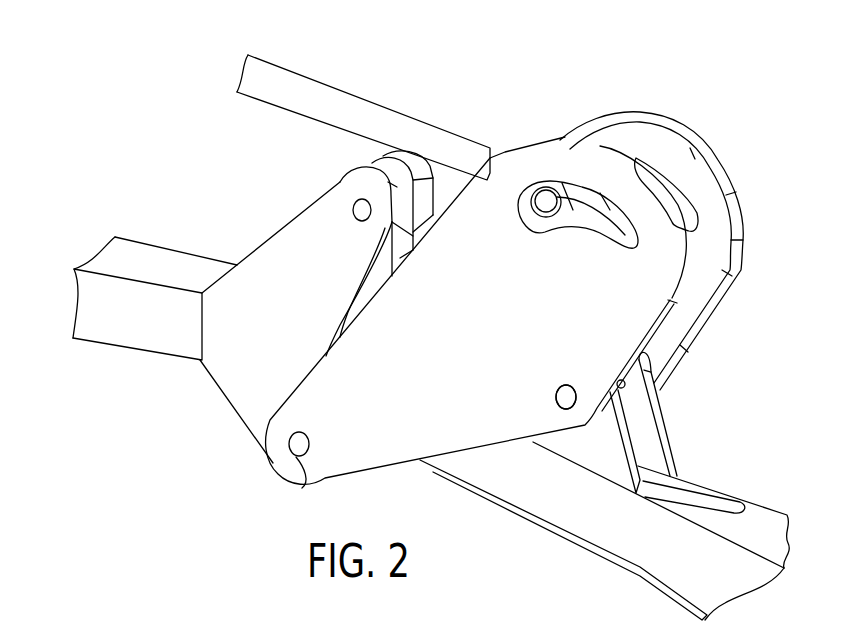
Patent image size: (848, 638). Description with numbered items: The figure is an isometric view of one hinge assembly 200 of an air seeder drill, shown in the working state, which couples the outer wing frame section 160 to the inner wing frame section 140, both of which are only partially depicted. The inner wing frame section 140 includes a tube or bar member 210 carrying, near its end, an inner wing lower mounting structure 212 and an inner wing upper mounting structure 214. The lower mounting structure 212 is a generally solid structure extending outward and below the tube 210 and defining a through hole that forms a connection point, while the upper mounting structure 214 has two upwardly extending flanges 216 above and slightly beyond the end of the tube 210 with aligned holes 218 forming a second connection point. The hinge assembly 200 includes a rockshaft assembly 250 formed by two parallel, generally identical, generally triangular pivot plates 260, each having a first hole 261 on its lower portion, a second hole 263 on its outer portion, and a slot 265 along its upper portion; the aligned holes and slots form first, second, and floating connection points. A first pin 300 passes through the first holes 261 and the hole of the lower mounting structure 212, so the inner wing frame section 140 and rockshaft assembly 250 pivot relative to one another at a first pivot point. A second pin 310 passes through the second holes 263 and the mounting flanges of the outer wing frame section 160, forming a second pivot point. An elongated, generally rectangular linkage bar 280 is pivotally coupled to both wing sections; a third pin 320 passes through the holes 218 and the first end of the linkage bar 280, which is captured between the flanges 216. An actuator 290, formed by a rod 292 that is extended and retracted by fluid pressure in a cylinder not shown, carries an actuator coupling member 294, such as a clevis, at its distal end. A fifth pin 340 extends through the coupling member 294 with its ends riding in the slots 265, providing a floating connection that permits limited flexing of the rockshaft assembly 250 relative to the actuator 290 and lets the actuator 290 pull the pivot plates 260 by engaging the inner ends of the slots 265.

The hinge assembly 200 is at (146, 121).
The inner wing frame section 140 is at (160, 229).
The tube or bar member 210 is at (130, 262).
The inner wing lower mounting structure 212 is at (250, 385).
The inner wing upper mounting structure 214 is at (330, 161).
The upwardly extending flanges 216 is at (425, 185).
The aligned holes 218 is at (352, 202).
The third pin 320 is at (353, 212).
The actuator 290 is at (309, 51).
The rod 292 is at (343, 107).
The fifth pin 340 is at (537, 187).
The actuator coupling member 294 is at (545, 203).
The slot 265 is at (603, 200).
The rockshaft assembly 250 is at (729, 136).
The pivot plates 260 is at (680, 256).
The linkage bar 280 is at (400, 258).
The first pin 300 is at (290, 448).
The first hole 261 is at (302, 487).
The second hole 263 is at (557, 400).
The second pin 310 is at (570, 407).
The outer wing frame section 160 is at (731, 456).